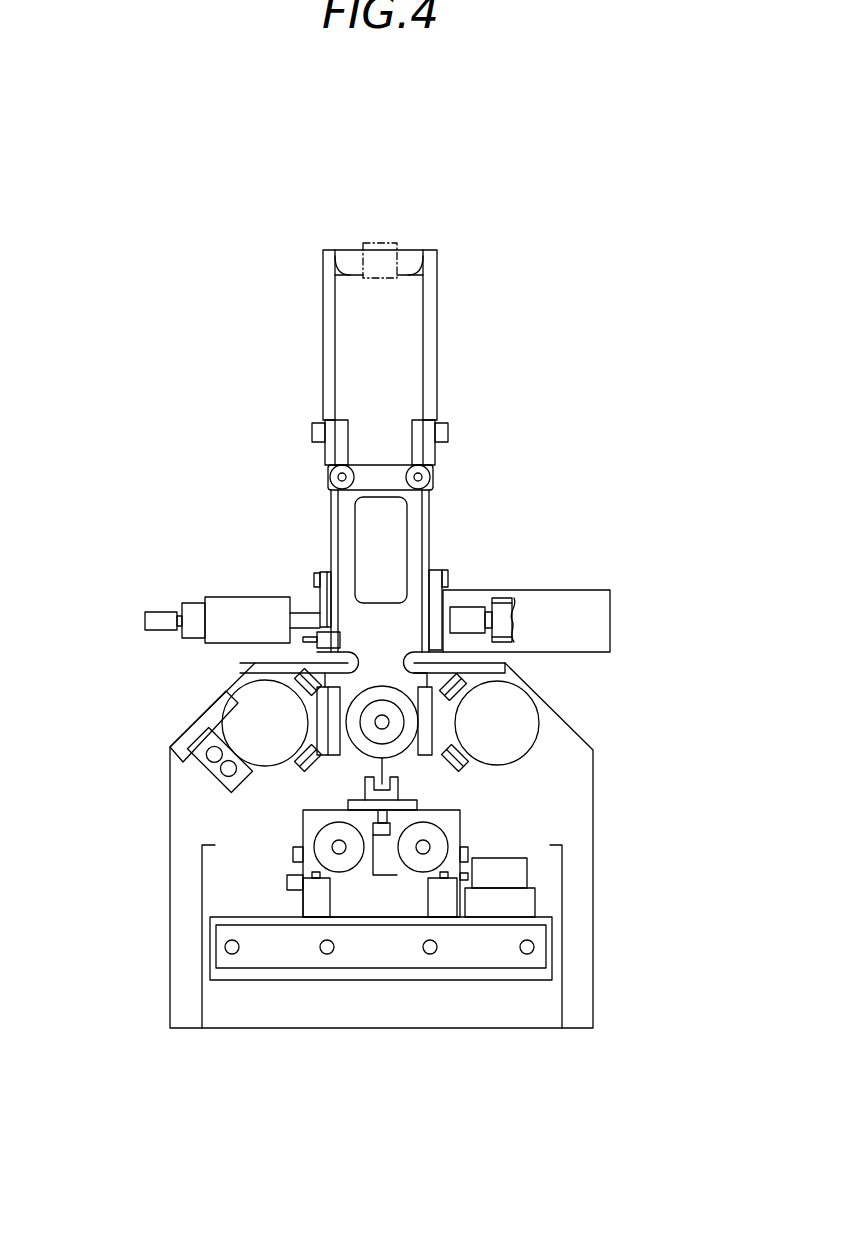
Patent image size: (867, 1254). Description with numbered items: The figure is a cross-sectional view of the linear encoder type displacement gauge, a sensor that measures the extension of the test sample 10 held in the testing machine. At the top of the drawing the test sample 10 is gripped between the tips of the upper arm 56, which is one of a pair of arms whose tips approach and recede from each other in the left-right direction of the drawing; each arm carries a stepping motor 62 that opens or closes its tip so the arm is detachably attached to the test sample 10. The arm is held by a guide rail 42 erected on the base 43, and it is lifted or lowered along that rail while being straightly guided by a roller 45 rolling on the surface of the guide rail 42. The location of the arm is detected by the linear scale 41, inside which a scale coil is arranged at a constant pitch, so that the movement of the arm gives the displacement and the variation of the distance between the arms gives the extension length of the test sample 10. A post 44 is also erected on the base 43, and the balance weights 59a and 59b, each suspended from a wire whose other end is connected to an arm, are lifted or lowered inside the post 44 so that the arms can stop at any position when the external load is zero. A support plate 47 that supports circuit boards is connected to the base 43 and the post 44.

The test sample 10 is at (385, 253).
The upper arm 56 is at (192, 428).
The stepping motor 62 is at (563, 610).
The roller 45 is at (252, 661).
The guide rail 42 is at (245, 713).
The linear scale 41 is at (382, 722).
The post 44 is at (462, 820).
The support plate 47 is at (198, 920).
The base 43 is at (580, 1000).
The balance weight 59a is at (347, 858).
The balance weight 59b is at (418, 858).